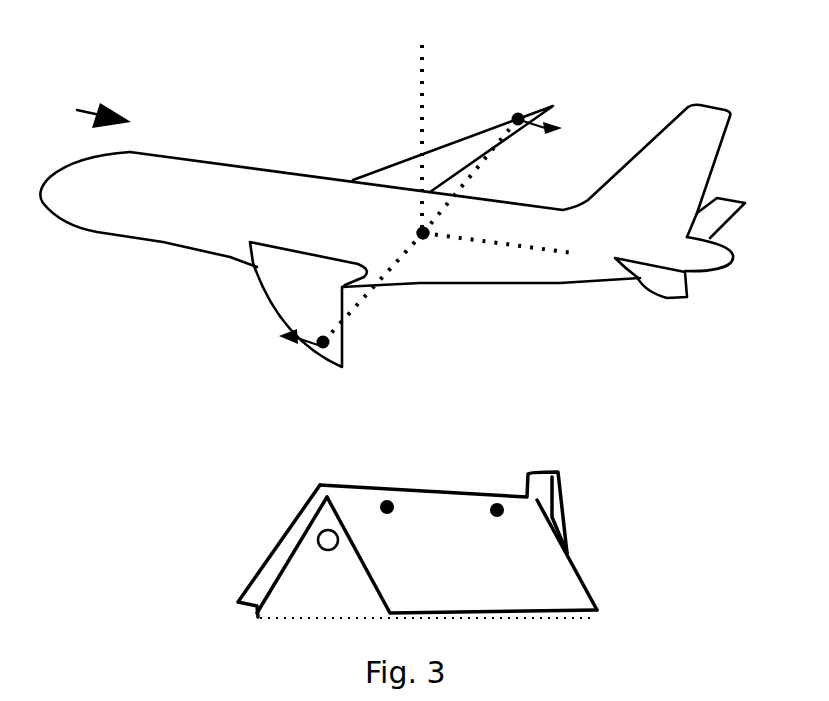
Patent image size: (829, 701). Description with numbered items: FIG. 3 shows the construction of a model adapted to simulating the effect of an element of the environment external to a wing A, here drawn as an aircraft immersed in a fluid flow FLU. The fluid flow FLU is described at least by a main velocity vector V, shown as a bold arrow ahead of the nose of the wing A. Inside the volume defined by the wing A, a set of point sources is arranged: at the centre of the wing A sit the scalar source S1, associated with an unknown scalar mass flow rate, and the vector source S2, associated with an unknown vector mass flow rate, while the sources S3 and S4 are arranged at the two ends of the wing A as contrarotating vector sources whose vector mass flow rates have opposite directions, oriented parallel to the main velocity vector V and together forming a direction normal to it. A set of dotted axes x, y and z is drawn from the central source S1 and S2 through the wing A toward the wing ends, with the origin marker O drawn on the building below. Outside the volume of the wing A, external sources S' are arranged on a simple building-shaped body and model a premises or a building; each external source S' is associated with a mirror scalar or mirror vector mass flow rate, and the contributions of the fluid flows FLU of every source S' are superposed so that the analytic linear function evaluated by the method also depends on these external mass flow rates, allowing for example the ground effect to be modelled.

The wing A is at (290, 300).
The fluid flow FLU is at (160, 85).
The main velocity vector V is at (88, 107).
The scalar source S1 is at (425, 237).
The vector source S2 is at (420, 233).
The contrarotating vector source S3 is at (556, 116).
The contrarotating vector source S4 is at (313, 352).
The external source S' is at (417, 508).
The x axis x is at (512, 236).
The y axis y is at (480, 154).
The z axis z is at (435, 121).
The origin marker O is at (328, 540).